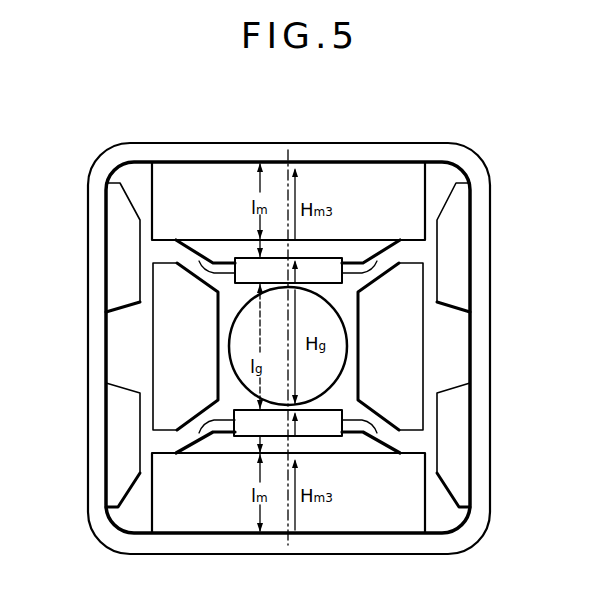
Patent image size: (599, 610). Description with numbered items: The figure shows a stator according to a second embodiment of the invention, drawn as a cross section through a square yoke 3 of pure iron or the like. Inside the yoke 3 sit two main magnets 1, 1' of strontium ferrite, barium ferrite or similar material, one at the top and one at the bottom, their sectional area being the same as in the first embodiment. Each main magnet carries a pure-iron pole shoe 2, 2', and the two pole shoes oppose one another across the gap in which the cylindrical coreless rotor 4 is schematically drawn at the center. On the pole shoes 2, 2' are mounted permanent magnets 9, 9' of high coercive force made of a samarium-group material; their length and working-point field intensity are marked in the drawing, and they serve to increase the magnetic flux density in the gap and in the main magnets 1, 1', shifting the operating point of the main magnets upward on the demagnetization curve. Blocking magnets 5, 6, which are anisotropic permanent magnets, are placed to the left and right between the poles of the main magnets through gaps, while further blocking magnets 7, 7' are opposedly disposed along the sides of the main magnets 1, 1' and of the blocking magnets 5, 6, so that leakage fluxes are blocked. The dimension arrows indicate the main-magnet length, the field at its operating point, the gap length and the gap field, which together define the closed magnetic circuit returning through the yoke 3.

The main magnet 1 is at (288, 175).
The main magnet 1' is at (288, 518).
The pole shoe 2 is at (271, 244).
The pole shoe 2' is at (270, 446).
The yoke 3 is at (93, 406).
The coreless rotor 4 is at (231, 332).
The blocking magnet 5 is at (408, 325).
The blocking magnet 6 is at (162, 343).
The blocking magnet 7 is at (287, 247).
The blocking magnet 7' is at (295, 445).
The permanent magnet 9 is at (286, 238).
The permanent magnet 9' is at (281, 451).